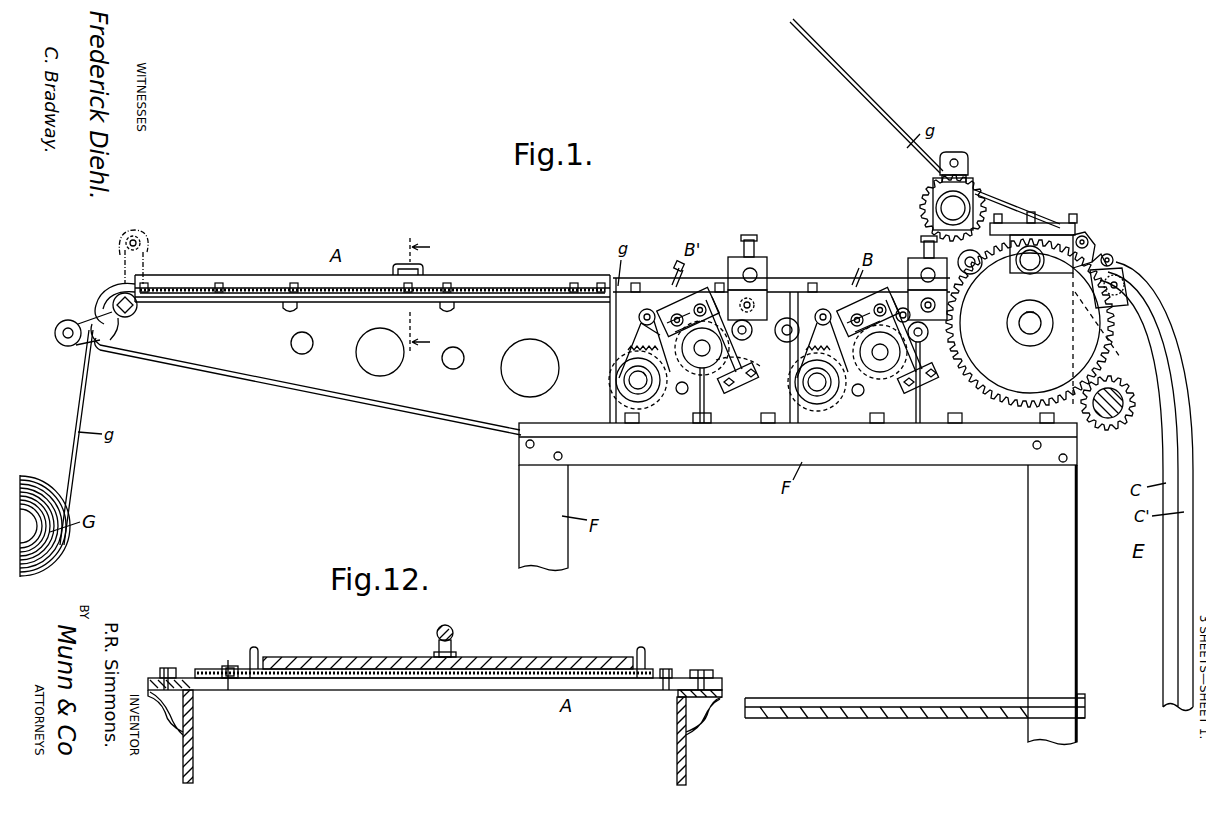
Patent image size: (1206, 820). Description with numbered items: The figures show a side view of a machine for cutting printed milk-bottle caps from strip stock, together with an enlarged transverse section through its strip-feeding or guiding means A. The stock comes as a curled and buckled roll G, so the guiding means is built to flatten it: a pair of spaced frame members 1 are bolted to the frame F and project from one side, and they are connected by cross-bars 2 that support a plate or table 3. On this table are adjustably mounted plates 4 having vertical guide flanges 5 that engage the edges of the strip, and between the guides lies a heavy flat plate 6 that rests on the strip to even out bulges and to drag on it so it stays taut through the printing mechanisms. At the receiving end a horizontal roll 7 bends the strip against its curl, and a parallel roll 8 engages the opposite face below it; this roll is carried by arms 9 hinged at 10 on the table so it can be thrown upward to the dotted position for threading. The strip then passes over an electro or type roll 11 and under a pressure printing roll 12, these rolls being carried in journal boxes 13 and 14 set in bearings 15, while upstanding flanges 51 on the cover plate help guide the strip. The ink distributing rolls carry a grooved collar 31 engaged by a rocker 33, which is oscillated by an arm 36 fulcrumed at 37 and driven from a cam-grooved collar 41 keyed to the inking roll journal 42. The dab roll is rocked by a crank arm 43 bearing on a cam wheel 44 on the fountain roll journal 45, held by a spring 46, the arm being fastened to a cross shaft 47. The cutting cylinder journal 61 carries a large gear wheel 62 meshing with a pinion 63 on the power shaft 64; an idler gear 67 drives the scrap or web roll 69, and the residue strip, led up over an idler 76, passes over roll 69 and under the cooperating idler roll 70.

In FIG. 1, the frame members 1 is at (346, 380).
In FIG. 12, the frame members 1 is at (677, 743).
In FIG. 1, the cross-bars 2 is at (290, 303).
In FIG. 12, the cross-bars 2 is at (356, 691).
In FIG. 1, the plate or table 3 is at (249, 301).
In FIG. 12, the plate or table 3 is at (291, 680).
In FIG. 12, the plates 4 is at (286, 668).
In FIG. 1, the vertical guide flanges 5 is at (273, 286).
In FIG. 12, the vertical guide flanges 5 is at (640, 650).
In FIG. 12, the flat plate 6 is at (483, 658).
In FIG. 1, the horizontal roll 7 is at (90, 300).
In FIG. 1, the parallel roll 8 is at (62, 346).
In FIG. 1, the arms 9 is at (96, 342).
In FIG. 12, the arms 9 is at (418, 660).
In FIG. 1, the hinge 10 is at (135, 312).
In FIG. 1, the electro or type roll 11 is at (980, 308).
In FIG. 1, the pressure printing roll 12 is at (902, 277).
In FIG. 1, the journal boxes 13 is at (906, 291).
In FIG. 1, the journal boxes 14 is at (921, 272).
In FIG. 1, the bearings 15 is at (768, 260).
In FIG. 1, the collar 31 is at (661, 300).
In FIG. 1, the rocker 33 is at (696, 290).
In FIG. 1, the arm 36 is at (745, 375).
In FIG. 1, the fulcrum 37 is at (746, 388).
In FIG. 1, the collar 41 is at (706, 365).
In FIG. 1, the journal 42 is at (699, 360).
In FIG. 1, the crank arm 43 is at (666, 404).
In FIG. 1, the cam wheel 44 is at (652, 394).
In FIG. 1, the journal 45 is at (633, 386).
In FIG. 1, the spring 46 is at (650, 346).
In FIG. 1, the shaft 47 is at (640, 318).
In FIG. 1, the upstanding flanges 51 is at (831, 281).
In FIG. 1, the journal 61 is at (1029, 330).
In FIG. 1, the large gear wheel 62 is at (1014, 408).
In FIG. 1, the pinion 63 is at (1115, 427).
In FIG. 1, the power shaft 64 is at (1113, 392).
In FIG. 1, the idler gear 67 is at (963, 256).
In FIG. 1, the scrap or web roll 69 is at (984, 192).
In FIG. 1, the idler scrap or web roll 70 is at (964, 157).
In FIG. 1, the idler 76 is at (1085, 237).